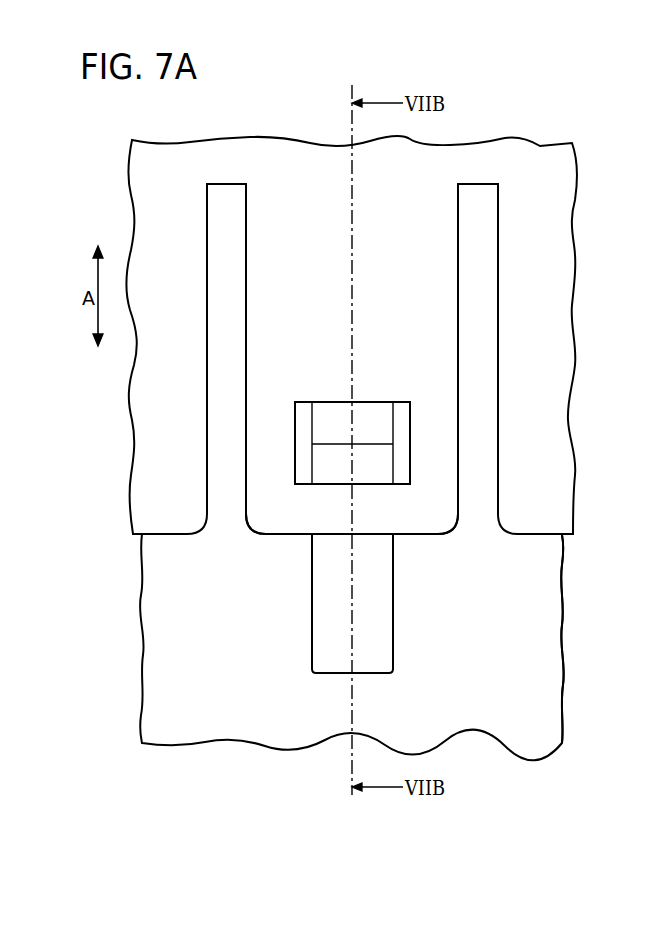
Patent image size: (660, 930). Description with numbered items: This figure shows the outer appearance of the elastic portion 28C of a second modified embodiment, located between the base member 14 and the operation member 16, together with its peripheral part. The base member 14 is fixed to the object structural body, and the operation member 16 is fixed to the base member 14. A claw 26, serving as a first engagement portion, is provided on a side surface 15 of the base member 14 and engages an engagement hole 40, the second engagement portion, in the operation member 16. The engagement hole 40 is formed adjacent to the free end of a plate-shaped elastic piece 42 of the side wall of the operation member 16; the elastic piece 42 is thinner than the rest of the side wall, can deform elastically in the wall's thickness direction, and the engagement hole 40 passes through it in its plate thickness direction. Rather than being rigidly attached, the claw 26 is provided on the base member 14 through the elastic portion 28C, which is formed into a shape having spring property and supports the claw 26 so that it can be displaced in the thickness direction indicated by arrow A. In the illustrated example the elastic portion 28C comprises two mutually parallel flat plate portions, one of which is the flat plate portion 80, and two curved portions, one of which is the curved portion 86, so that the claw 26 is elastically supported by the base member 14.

The base member 14 is at (540, 612).
The side surface 15 is at (540, 657).
The operation member 16 is at (546, 224).
The claw 26 is at (333, 413).
The elastic portion 28C is at (375, 590).
The engagement hole 40 is at (408, 432).
The elastic piece 42 is at (432, 335).
The flat plate portion 80 is at (322, 597).
The curved portion 86 is at (378, 675).